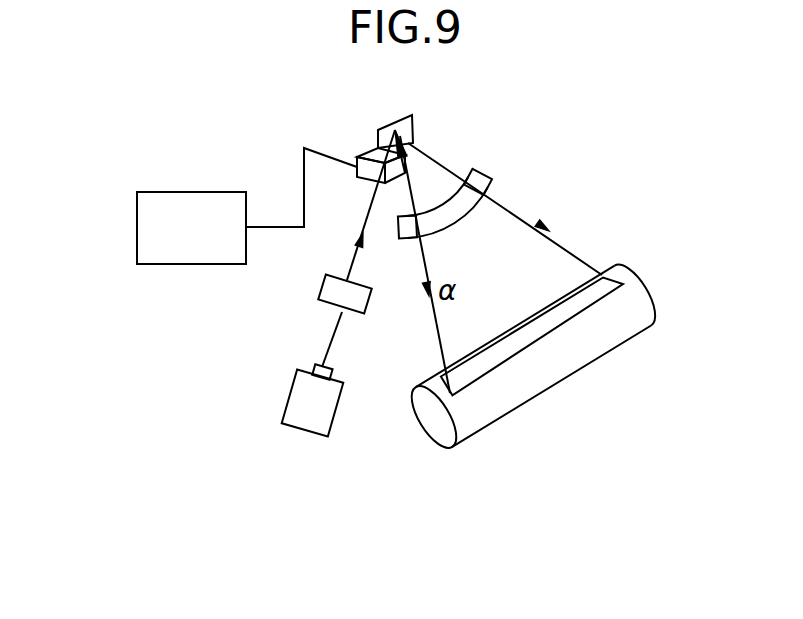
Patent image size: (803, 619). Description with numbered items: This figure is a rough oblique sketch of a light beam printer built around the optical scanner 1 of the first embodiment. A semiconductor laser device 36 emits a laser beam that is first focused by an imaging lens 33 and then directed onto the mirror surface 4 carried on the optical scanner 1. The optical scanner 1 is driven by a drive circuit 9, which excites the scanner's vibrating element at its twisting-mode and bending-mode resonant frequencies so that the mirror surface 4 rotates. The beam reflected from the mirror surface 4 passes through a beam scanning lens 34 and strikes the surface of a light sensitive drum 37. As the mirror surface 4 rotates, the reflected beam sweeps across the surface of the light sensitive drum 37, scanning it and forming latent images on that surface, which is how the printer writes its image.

The optical scanner 1 is at (395, 132).
The mirror surface 4 is at (408, 127).
The drive circuit 9 is at (137, 245).
The imaging lens 33 is at (330, 296).
The beam scanning lens 34 is at (492, 181).
The semiconductor laser device 36 is at (298, 400).
The light sensitive drum 37 is at (640, 317).